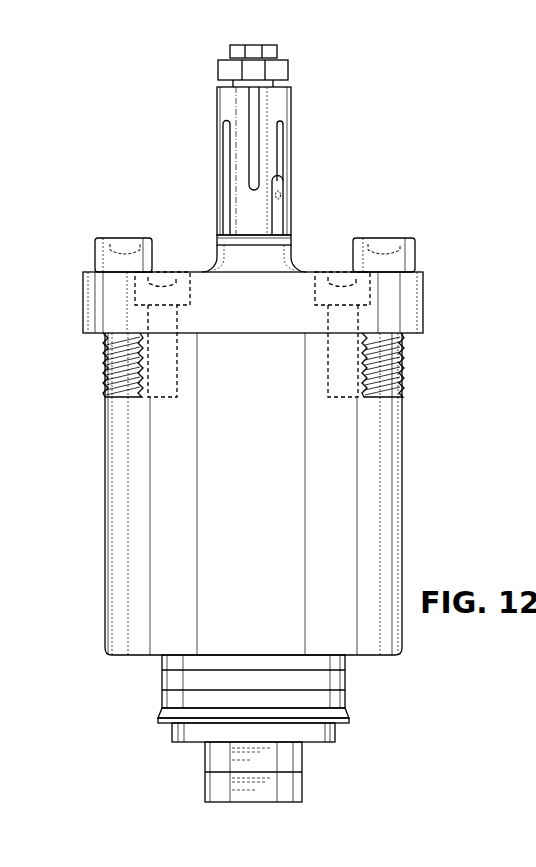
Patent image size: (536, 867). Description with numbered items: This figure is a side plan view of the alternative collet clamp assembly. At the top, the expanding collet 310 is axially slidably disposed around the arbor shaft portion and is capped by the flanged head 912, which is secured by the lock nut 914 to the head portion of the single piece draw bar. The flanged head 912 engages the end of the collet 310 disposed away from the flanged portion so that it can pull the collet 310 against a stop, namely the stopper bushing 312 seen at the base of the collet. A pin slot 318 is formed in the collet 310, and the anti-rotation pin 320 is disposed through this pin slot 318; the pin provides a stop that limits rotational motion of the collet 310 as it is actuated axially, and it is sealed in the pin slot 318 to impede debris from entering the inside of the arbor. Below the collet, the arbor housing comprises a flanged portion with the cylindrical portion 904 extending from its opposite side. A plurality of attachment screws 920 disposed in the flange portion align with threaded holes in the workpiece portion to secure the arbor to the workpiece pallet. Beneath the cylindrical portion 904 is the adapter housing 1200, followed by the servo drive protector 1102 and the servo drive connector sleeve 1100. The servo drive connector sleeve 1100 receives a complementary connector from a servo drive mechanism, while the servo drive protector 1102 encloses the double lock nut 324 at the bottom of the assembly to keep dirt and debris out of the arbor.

The lock nut 914 is at (238, 46).
The flanged head 912 is at (218, 71).
The collet 310 is at (291, 148).
The pin slot 318 is at (278, 184).
The anti-rotation pin 320 is at (280, 195).
The stopper bushing 312 is at (217, 238).
The attachment screws 920 is at (132, 240).
The cylindrical portion 904 is at (388, 501).
The adapter housing 1200 is at (345, 677).
The servo drive protector 1102 is at (349, 718).
The servo drive connector sleeve 1100 is at (335, 740).
The double lock nut 324 is at (302, 783).